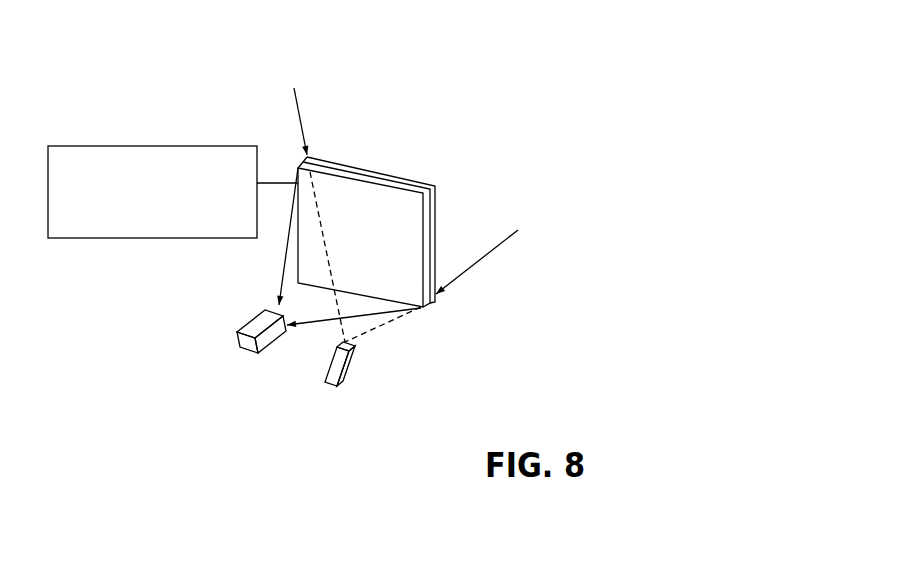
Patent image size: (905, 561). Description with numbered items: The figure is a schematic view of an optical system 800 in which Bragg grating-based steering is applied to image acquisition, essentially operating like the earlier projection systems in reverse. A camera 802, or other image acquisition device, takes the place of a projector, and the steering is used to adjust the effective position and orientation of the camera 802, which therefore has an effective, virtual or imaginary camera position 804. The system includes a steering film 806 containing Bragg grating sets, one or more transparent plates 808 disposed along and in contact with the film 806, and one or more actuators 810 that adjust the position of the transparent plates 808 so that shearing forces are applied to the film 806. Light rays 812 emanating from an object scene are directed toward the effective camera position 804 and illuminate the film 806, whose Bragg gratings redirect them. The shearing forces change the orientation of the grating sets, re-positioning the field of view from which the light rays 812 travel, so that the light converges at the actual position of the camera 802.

The optical system 800 is at (509, 42).
The camera 802 is at (267, 349).
The effective camera position 804 is at (350, 381).
The steering film 806 is at (390, 245).
The transparent plate 808 is at (433, 267).
The actuator 810 is at (133, 215).
The light rays 812 is at (322, 88).